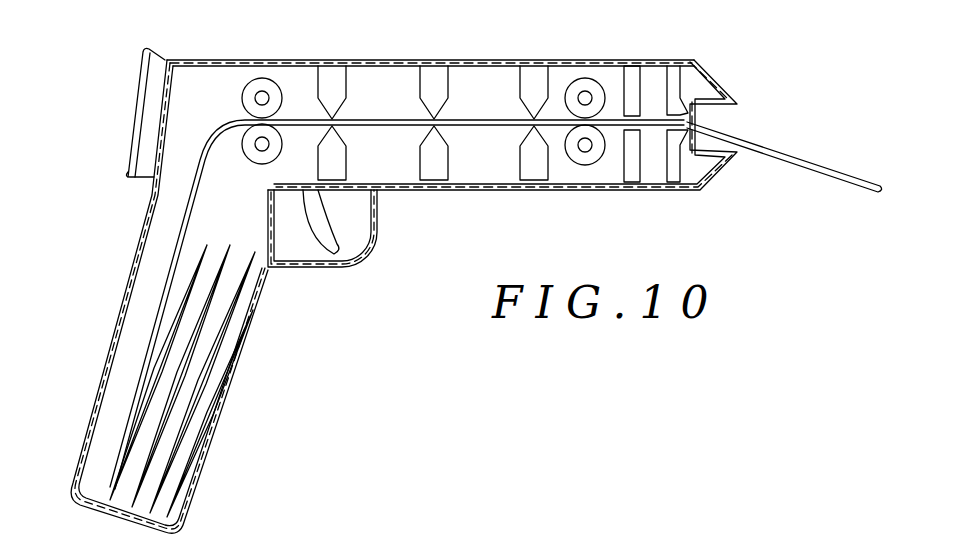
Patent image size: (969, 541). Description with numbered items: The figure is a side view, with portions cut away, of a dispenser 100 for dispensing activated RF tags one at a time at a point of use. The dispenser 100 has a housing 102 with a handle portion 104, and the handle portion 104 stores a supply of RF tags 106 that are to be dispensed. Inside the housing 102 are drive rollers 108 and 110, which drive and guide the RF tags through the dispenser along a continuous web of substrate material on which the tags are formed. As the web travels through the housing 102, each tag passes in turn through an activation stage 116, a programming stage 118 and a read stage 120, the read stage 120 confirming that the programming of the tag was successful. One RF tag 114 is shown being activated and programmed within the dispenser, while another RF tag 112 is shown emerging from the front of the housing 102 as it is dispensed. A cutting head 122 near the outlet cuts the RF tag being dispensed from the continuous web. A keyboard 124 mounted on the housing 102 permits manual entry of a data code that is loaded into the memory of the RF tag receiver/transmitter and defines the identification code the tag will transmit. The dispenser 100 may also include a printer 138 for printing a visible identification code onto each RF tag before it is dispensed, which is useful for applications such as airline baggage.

The dispenser 100 is at (455, 44).
The housing 102 is at (490, 192).
The handle portion 104 is at (108, 350).
The RF tags 106 is at (205, 413).
The drive roller 108 is at (257, 78).
The drive roller 110 is at (585, 78).
The RF tag 112 is at (777, 151).
The RF tag 114 is at (390, 118).
The activation stage 116 is at (333, 72).
The programming stage 118 is at (432, 72).
The read stage 120 is at (535, 75).
The cutting head 122 is at (675, 83).
The keyboard 124 is at (143, 52).
The printer 138 is at (633, 70).